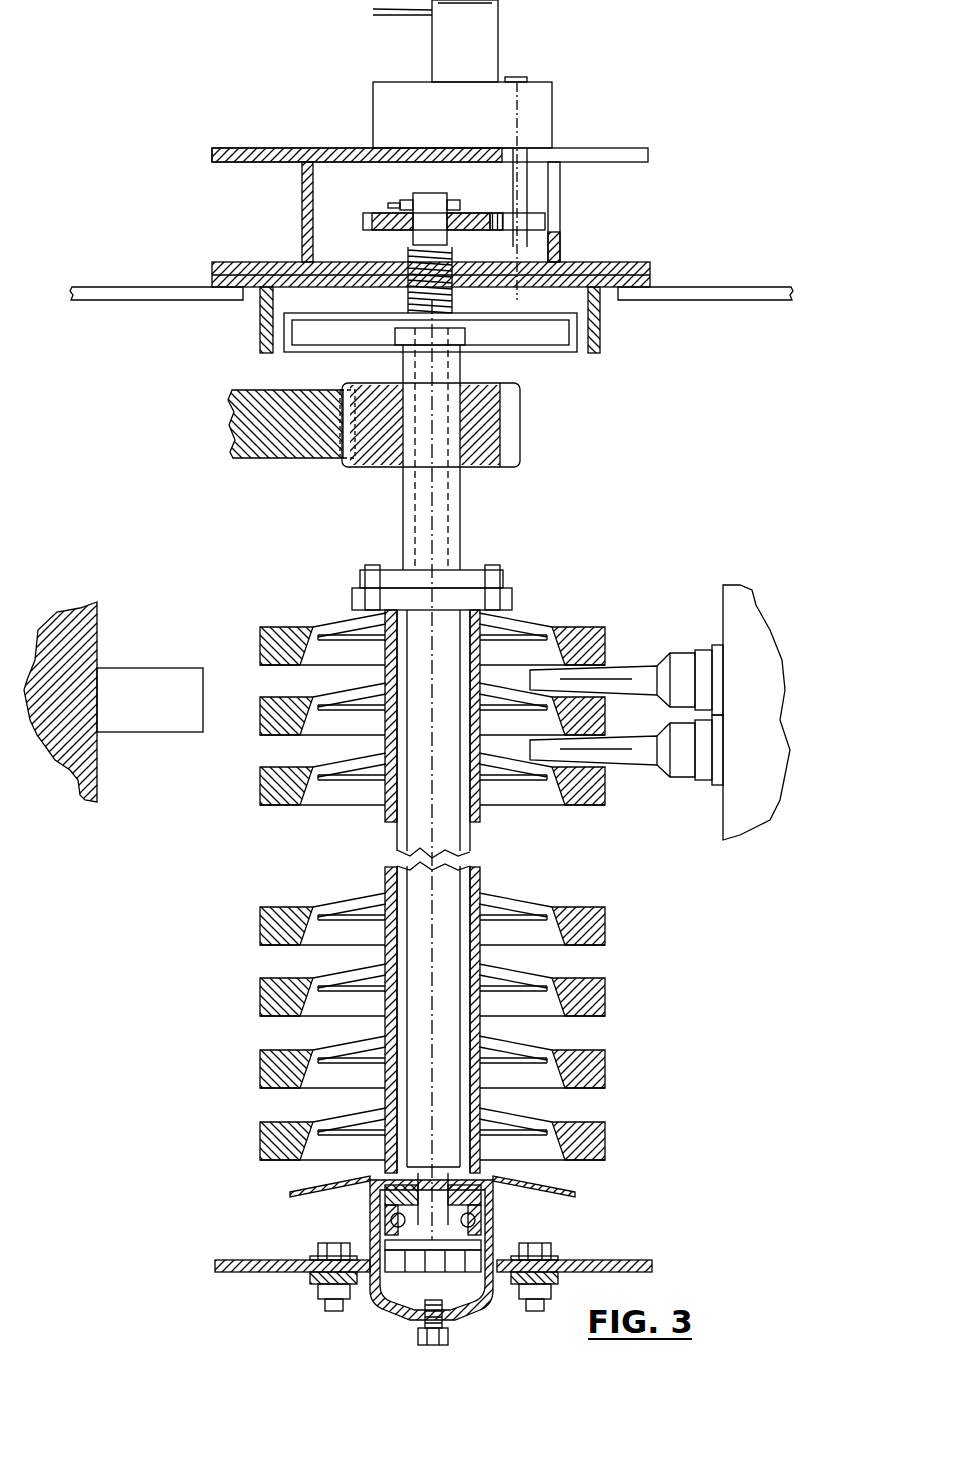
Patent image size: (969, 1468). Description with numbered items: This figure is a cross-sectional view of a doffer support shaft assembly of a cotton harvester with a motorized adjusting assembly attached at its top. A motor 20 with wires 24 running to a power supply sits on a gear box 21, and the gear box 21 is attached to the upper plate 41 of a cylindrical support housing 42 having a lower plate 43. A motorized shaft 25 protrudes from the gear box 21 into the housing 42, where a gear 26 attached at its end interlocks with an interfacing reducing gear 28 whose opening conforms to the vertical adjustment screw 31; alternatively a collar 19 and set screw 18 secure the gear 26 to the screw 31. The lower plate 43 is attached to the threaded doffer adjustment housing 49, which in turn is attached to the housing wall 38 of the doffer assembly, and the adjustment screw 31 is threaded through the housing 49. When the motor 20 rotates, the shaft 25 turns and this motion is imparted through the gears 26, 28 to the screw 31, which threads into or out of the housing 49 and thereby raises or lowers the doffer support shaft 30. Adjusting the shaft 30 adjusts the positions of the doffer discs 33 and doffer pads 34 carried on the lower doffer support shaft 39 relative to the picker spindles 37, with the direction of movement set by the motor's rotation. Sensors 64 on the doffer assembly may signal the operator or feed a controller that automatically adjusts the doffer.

The set screw 18 is at (390, 202).
The collar 19 is at (457, 203).
The motor 20 is at (488, 48).
The gear box 21 is at (537, 108).
The wires 24 is at (388, 8).
The motorized shaft 25 is at (523, 186).
The gear 26 is at (536, 232).
The interfacing (reducing) gear 28 is at (478, 225).
The doffer support shaft 30 is at (440, 510).
The vertical adjustment screw 31 is at (432, 203).
The doffer discs 33 is at (537, 610).
The doffer pads 34 is at (597, 610).
The picker spindles 37 is at (630, 670).
The housing wall 38 is at (150, 295).
The lower doffer support shaft 39 is at (468, 842).
The upper plate 41 is at (230, 155).
The cylindrical support housing 42 is at (300, 202).
The lower plate 43 is at (235, 267).
The threaded doffer adjustment housing 49 is at (637, 280).
The sensors 64 is at (145, 677).